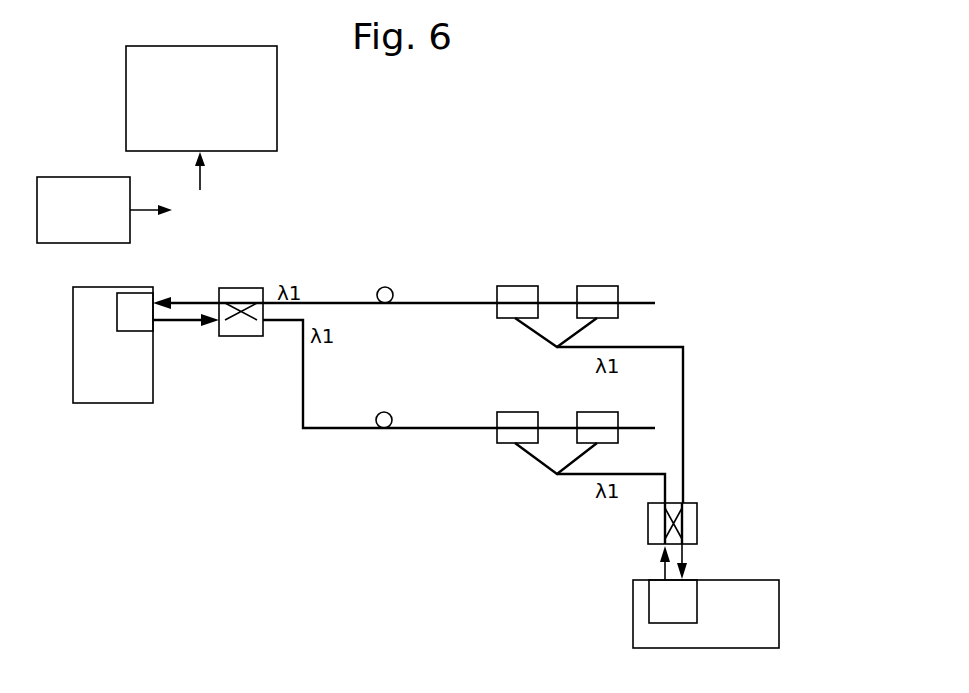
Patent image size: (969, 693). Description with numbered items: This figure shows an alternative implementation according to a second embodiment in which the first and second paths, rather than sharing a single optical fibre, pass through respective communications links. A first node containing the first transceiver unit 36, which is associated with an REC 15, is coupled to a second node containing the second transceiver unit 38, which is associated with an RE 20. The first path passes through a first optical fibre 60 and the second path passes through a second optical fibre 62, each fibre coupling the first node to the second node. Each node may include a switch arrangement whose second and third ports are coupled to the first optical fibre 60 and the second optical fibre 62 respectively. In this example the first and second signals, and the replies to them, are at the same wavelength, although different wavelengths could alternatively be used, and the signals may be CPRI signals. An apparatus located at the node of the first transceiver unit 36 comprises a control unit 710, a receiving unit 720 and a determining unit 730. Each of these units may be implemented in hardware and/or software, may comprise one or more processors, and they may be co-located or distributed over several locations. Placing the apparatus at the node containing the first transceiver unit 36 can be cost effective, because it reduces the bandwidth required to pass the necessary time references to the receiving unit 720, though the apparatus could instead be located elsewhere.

The REC 15 is at (123, 396).
The RE 20 is at (760, 627).
The first transceiver unit 36 is at (127, 311).
The second transceiver unit 38 is at (660, 596).
The first optical fibre 60 is at (385, 287).
The second optical fibre 62 is at (384, 412).
The control unit 710 is at (72, 177).
The receiving unit 720 is at (263, 130).
The determining unit 730 is at (201, 98).